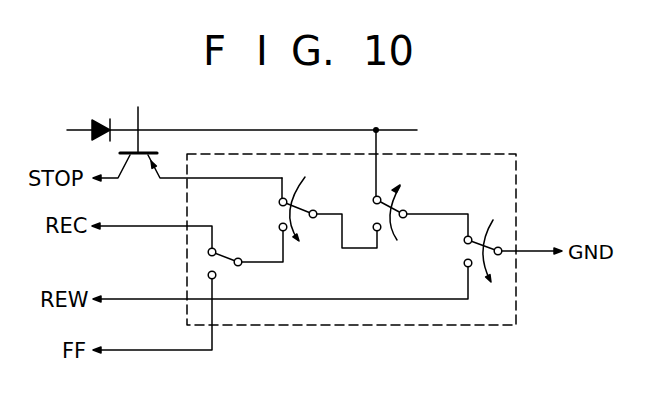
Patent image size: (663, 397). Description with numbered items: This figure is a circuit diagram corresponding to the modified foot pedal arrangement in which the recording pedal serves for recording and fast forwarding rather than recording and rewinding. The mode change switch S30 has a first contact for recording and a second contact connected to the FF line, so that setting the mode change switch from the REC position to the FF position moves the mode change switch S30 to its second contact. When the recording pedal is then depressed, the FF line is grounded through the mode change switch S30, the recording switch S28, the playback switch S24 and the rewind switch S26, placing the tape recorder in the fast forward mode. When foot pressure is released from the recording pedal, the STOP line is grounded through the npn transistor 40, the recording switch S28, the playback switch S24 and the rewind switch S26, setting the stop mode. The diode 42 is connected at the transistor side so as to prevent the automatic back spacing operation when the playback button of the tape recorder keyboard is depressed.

The diode 42 is at (103, 120).
The npn transistor 40 is at (138, 164).
The recording switch S28 is at (311, 203).
The playback switch S24 is at (409, 204).
The rewind switch S26 is at (498, 241).
The mode change switch S30 is at (221, 267).